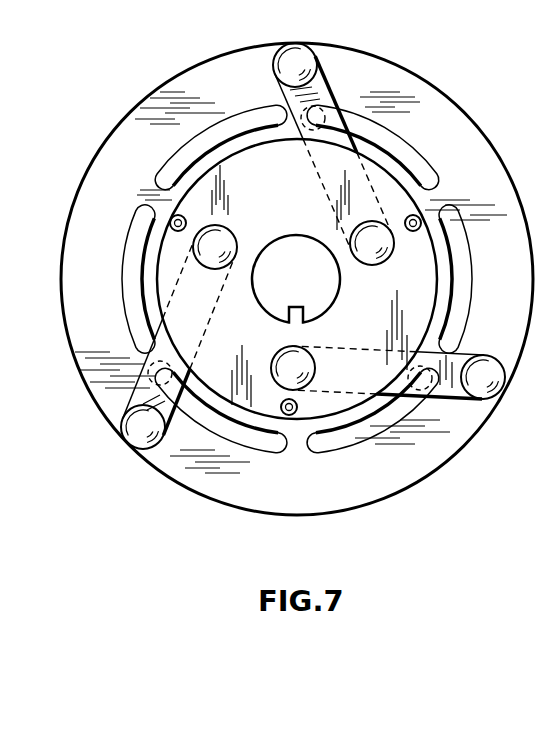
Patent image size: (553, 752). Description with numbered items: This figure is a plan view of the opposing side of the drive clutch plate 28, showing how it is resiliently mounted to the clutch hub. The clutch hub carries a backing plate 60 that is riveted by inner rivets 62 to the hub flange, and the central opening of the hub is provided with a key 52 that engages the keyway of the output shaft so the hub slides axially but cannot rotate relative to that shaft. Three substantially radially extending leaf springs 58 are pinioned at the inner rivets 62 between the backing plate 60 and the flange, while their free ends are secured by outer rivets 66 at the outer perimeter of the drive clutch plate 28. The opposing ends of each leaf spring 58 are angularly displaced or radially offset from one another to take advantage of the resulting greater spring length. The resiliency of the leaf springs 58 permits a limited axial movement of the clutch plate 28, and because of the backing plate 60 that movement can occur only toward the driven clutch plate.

The drive clutch plate 28 is at (483, 133).
The key 52 is at (301, 307).
The leaf springs 58 is at (328, 76).
The backing plate 60 is at (289, 200).
The inner rivets 62 is at (222, 270).
The outer rivets 66 is at (273, 66).